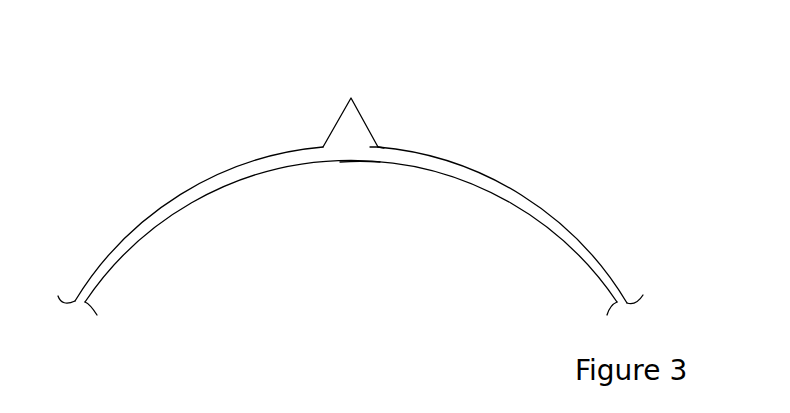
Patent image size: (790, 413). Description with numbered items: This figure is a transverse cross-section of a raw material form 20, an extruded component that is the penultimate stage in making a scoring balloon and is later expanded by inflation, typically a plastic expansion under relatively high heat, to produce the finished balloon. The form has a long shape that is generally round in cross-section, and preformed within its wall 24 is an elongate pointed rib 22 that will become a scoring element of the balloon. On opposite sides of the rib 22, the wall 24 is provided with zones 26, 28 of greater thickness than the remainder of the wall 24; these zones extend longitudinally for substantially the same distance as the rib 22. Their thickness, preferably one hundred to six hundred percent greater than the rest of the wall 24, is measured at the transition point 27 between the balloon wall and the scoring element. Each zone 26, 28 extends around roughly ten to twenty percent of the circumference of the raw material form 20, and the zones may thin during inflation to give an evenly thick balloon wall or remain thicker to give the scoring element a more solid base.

The raw material form 20 is at (340, 168).
The elongate pointed rib 22 is at (353, 114).
The wall 24 is at (340, 185).
The zone of greater thickness 26 is at (278, 157).
The transition point 27 is at (380, 144).
The zone of greater thickness 28 is at (413, 163).